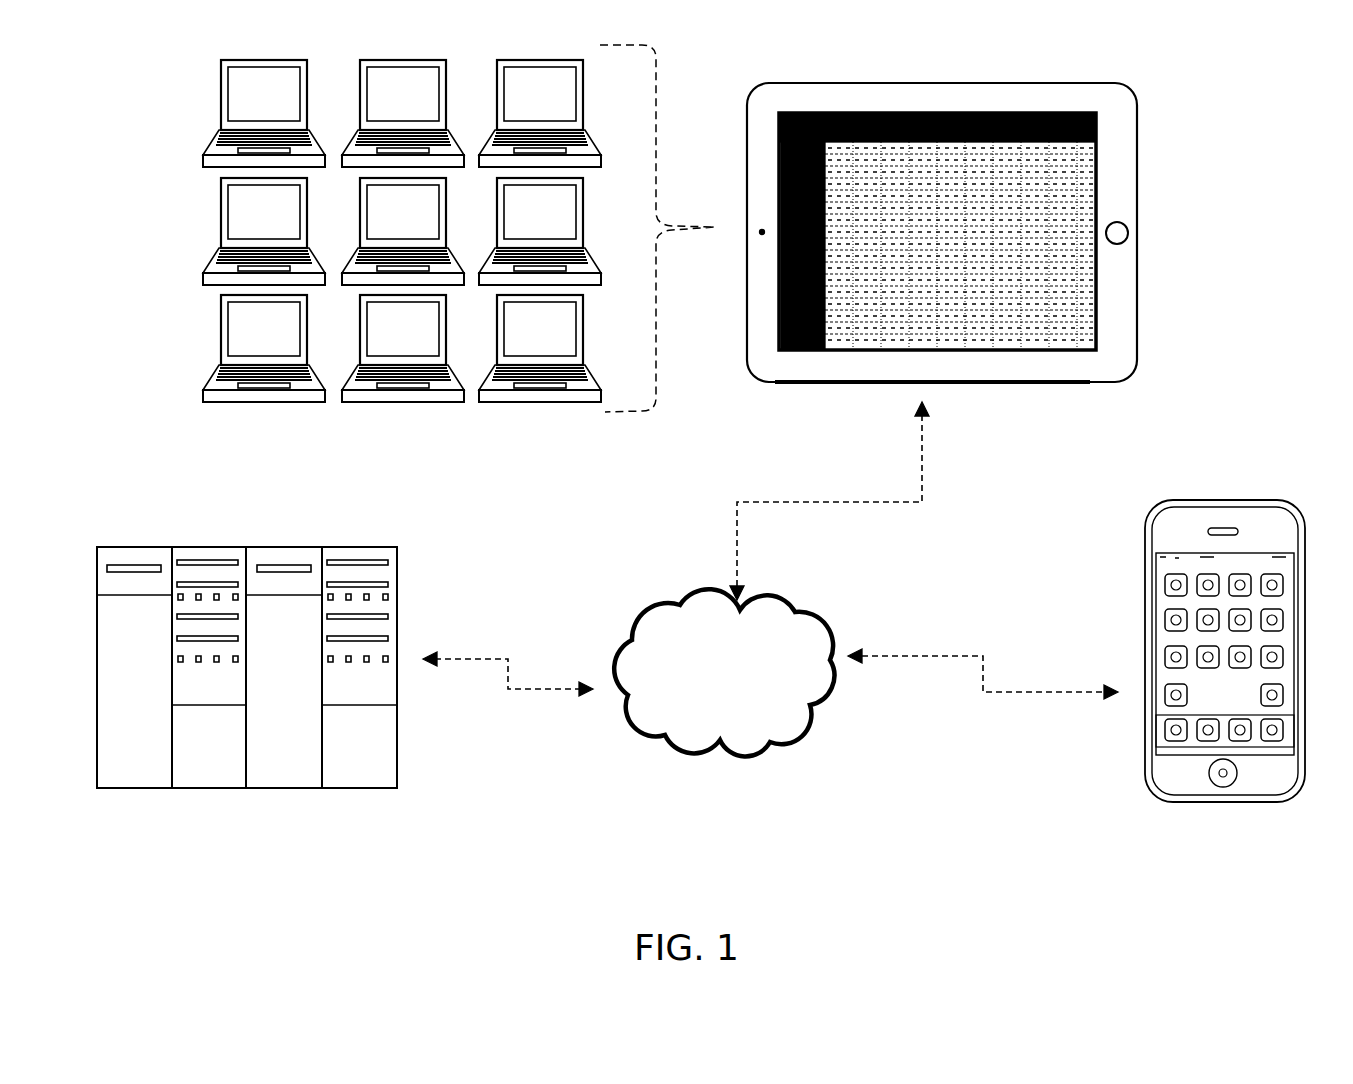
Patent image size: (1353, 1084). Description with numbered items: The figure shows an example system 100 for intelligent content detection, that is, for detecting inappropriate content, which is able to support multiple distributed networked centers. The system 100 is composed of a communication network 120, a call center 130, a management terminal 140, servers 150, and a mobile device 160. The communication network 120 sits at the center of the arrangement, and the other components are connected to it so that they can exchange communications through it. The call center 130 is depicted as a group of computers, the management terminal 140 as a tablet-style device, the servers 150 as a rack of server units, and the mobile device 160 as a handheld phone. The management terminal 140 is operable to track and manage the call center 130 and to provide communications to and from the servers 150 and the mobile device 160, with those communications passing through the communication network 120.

The system 100 is at (1225, 197).
The communication network 120 is at (748, 712).
The call center 130 is at (430, 228).
The management terminal 140 is at (1138, 369).
The servers 150 is at (391, 785).
The mobile device 160 is at (1295, 787).